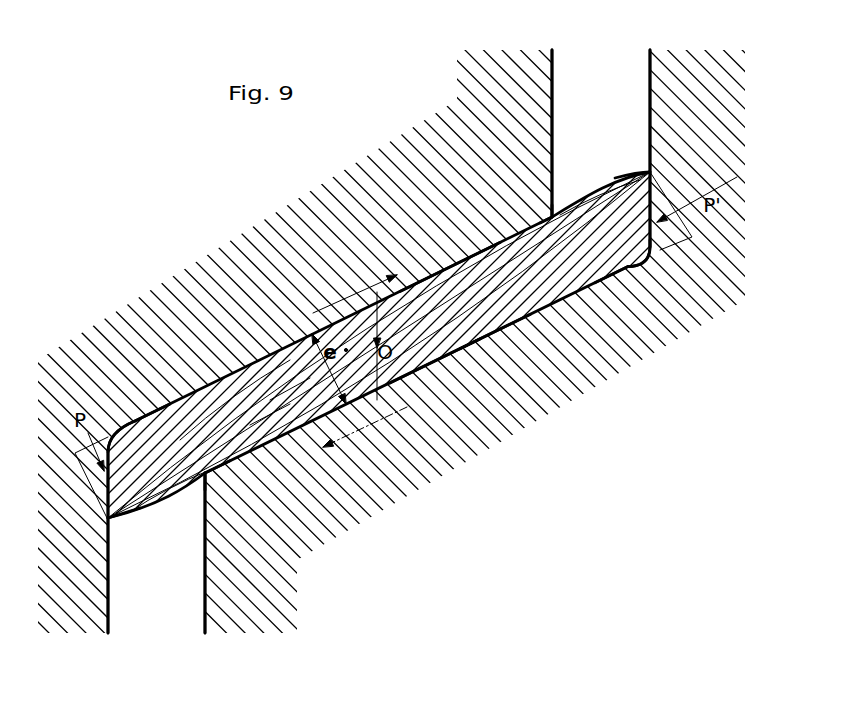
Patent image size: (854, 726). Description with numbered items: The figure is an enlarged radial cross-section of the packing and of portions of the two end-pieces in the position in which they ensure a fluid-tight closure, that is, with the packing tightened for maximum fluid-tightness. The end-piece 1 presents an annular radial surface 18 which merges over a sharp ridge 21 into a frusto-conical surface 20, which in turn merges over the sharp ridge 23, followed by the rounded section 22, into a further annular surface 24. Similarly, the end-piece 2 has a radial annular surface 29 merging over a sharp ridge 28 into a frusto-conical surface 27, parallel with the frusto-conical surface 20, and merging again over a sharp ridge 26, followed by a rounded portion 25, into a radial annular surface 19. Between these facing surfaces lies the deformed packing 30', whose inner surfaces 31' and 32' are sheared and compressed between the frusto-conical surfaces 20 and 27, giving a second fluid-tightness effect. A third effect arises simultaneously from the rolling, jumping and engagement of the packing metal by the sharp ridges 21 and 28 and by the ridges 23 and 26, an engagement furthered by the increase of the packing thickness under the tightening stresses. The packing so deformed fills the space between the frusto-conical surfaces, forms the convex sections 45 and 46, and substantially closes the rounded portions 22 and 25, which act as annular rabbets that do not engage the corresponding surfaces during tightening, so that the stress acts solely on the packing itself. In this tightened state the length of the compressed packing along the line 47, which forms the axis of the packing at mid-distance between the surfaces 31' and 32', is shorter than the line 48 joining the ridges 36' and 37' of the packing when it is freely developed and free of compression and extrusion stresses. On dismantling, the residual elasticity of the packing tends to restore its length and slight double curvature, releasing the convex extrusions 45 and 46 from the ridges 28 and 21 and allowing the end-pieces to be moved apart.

The end-piece 1 is at (246, 231).
The end-piece 2 is at (463, 494).
The annular radial surface 18 is at (553, 100).
The radial annular surface 19 is at (650, 85).
The frusto-conical surface 20 is at (489, 263).
The sharp ridge 21 is at (552, 216).
The rounded section 22 is at (120, 413).
The sharp ridge 23 is at (146, 412).
The annular surface 24 is at (110, 582).
The rounded portion 25 is at (648, 268).
The sharp ridge 26 is at (612, 279).
The frusto-conical surface 27 is at (493, 312).
The sharp ridge 28 is at (207, 475).
The radial annular surface 29 is at (199, 574).
The deformed packing 30' is at (235, 372).
The inner surface of the packing 31' is at (450, 255).
The inner surface of the packing 32' is at (435, 376).
The ridge of the packing 36' is at (95, 533).
The ridge of the packing 37' is at (662, 153).
The convex section 45 is at (162, 488).
The convex section 46 is at (599, 193).
The axis line of the packing 47 is at (290, 390).
The line joining the packing ridges 48 is at (268, 415).